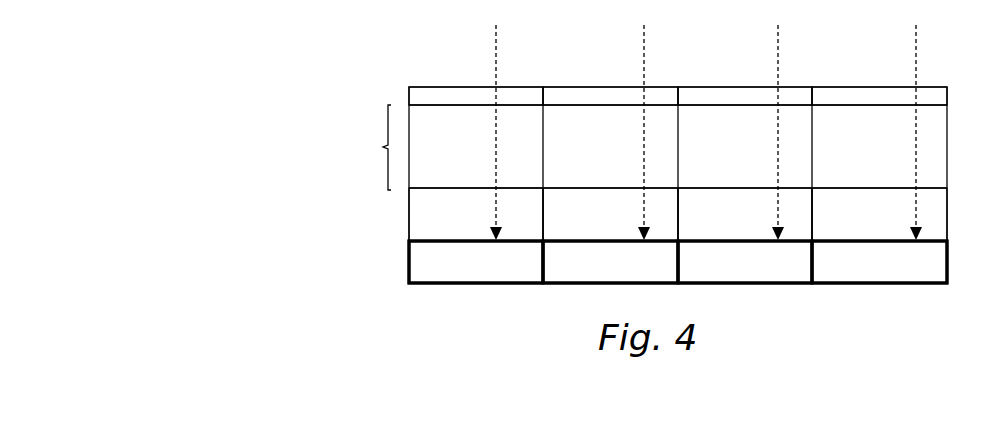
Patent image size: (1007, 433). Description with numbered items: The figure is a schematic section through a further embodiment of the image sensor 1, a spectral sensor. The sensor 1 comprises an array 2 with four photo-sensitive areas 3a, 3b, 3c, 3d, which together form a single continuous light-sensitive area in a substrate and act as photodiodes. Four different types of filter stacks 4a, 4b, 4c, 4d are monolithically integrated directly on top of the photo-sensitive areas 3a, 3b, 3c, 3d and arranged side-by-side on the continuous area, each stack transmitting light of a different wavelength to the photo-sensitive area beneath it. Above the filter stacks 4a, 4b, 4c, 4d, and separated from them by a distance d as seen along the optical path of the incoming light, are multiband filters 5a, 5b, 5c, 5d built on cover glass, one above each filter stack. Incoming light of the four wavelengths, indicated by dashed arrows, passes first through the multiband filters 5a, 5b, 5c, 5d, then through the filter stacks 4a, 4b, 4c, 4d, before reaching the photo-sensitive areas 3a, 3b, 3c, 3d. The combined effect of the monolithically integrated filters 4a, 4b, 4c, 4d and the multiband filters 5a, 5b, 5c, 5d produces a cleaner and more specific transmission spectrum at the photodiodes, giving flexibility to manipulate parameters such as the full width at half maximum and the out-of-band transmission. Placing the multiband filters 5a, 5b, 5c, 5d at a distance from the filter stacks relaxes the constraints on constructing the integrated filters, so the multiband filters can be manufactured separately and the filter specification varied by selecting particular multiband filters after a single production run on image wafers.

The image sensor 1 is at (272, 86).
The array 2 is at (390, 259).
The distance d is at (377, 147).
The photo-sensitive area 3a is at (480, 274).
The photo-sensitive area 3b is at (620, 274).
The photo-sensitive area 3c is at (752, 274).
The photo-sensitive area 3d is at (884, 274).
The filter stack 4a is at (479, 224).
The filter stack 4b is at (620, 224).
The filter stack 4c is at (747, 224).
The filter stack 4d is at (880, 224).
The multiband filter 5a is at (440, 96).
The multiband filter 5b is at (592, 96).
The multiband filter 5c is at (727, 96).
The multiband filter 5d is at (863, 96).